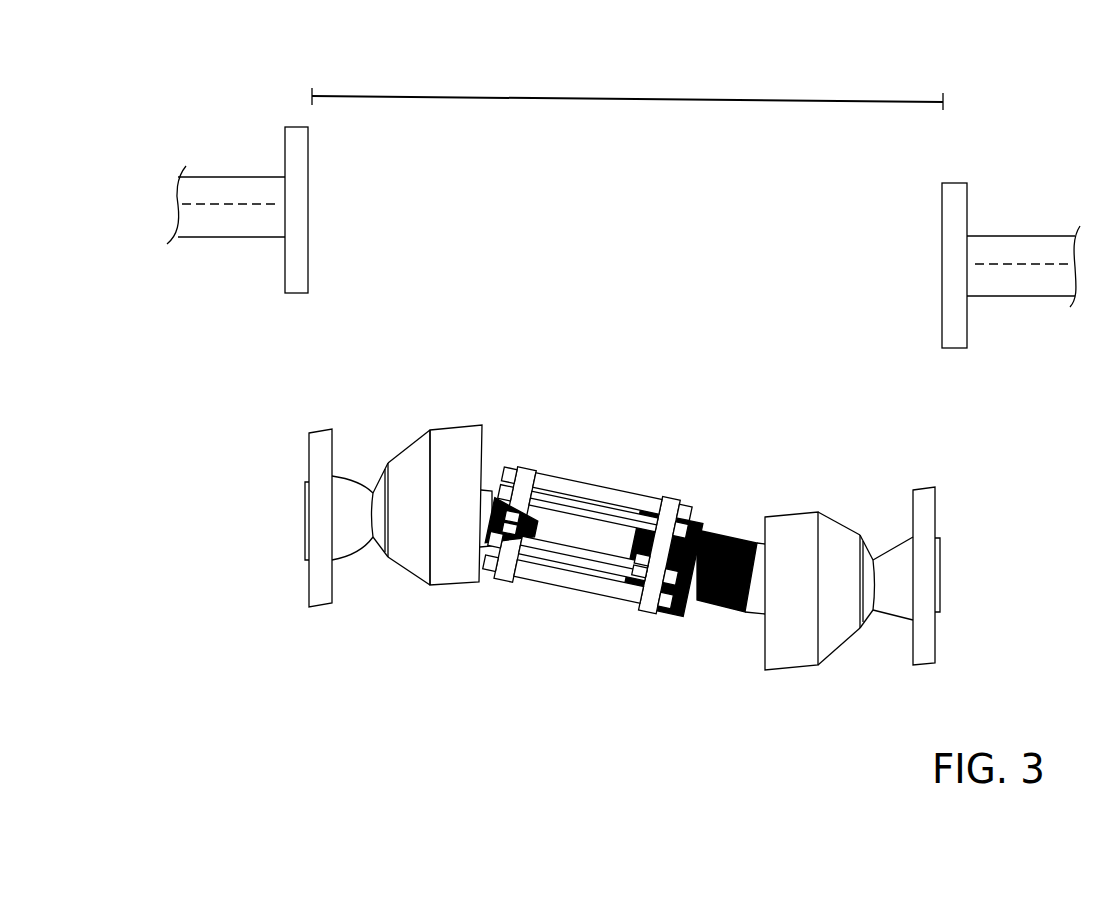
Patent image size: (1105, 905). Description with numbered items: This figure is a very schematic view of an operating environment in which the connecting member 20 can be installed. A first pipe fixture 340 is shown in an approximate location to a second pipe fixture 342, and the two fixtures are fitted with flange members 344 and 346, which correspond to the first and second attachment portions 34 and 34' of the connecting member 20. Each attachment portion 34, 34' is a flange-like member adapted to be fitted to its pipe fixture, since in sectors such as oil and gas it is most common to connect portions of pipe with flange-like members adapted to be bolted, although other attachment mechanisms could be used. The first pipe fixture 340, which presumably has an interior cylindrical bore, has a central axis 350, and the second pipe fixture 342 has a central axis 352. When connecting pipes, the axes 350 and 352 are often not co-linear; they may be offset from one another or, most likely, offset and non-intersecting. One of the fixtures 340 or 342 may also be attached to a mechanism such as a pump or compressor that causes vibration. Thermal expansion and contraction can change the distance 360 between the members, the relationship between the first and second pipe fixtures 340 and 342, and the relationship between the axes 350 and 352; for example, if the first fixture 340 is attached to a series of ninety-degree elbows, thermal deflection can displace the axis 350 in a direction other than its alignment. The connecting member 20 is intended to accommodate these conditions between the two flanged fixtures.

The connecting member 20 is at (624, 650).
The attachment portion 34 is at (401, 467).
The second attachment portion 34' is at (818, 530).
The first pipe fixture 340 is at (178, 183).
The second pipe fixture 342 is at (995, 247).
The flange member 344 is at (293, 278).
The flange member 346 is at (954, 340).
The central axis 350 is at (222, 197).
The central axis 352 is at (1027, 272).
The distance 360 is at (603, 98).